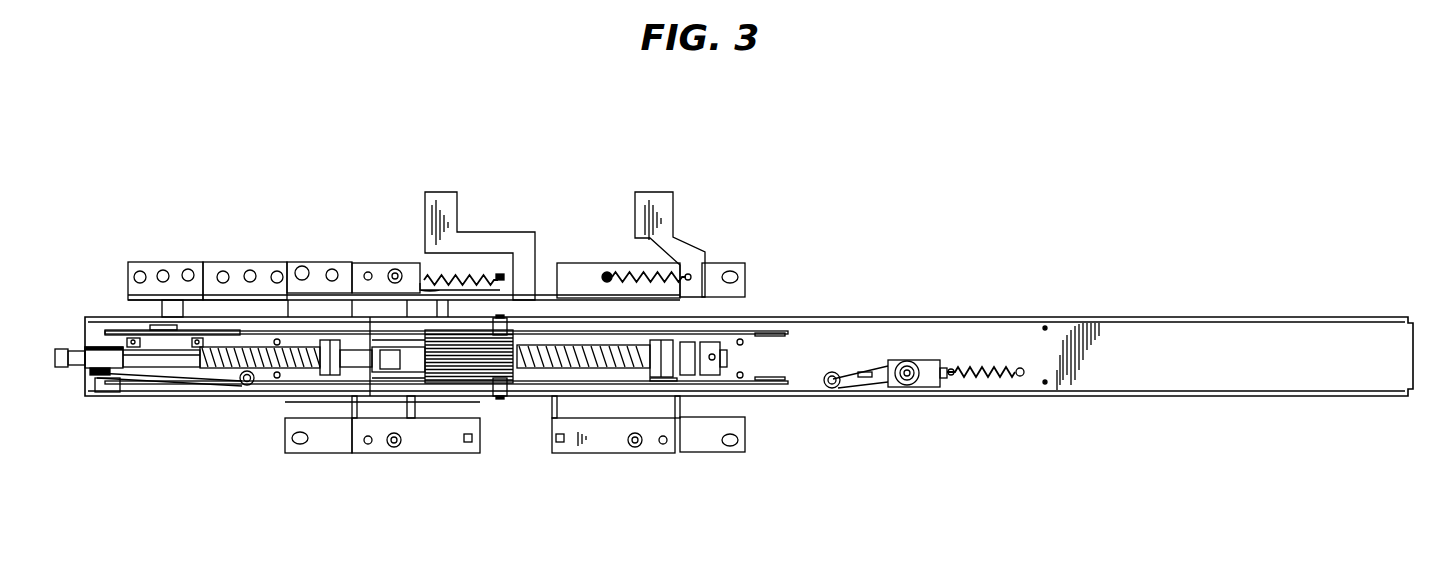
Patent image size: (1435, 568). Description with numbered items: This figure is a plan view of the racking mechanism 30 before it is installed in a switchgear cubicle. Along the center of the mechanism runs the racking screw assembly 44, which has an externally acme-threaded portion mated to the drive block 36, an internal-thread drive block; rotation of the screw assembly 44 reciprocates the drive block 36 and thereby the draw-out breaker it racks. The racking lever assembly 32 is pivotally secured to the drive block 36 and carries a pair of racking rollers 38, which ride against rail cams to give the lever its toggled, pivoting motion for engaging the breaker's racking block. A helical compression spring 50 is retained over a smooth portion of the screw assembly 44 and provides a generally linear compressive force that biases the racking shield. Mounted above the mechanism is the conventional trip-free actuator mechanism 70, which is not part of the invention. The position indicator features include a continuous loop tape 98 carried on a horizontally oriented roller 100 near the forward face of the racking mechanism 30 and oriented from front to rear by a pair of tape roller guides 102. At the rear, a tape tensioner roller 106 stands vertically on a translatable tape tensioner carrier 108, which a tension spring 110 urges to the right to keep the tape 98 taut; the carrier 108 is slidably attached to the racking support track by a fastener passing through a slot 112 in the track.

The racking mechanism 30 is at (787, 292).
The racking lever assembly 32 is at (458, 366).
The drive block 36 is at (397, 380).
The racking rollers 38 is at (505, 327).
The racking screw assembly 44 is at (587, 338).
The helical compression spring 50 is at (270, 368).
The trip-free actuator mechanism 70 is at (417, 173).
The continuous loop tape 98 is at (140, 387).
The roller 100 is at (95, 385).
The tape roller guides 102 is at (242, 386).
The tape tensioner roller 106 is at (910, 383).
The tape tensioner carrier 108 is at (932, 365).
The tension spring 110 is at (995, 375).
The slot 112 is at (866, 372).